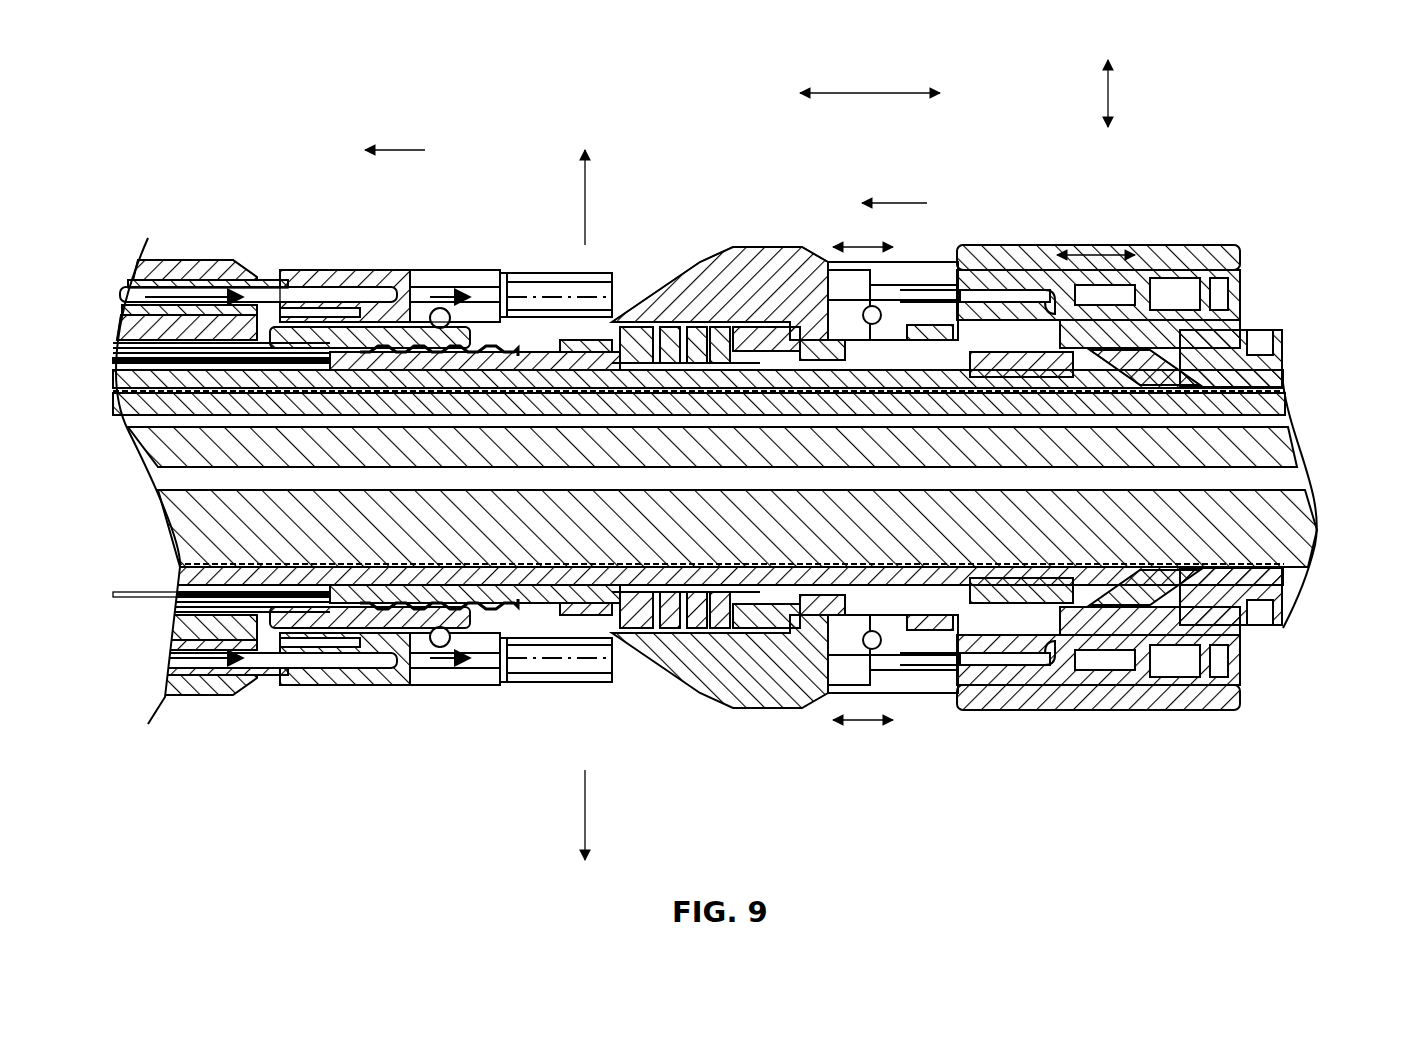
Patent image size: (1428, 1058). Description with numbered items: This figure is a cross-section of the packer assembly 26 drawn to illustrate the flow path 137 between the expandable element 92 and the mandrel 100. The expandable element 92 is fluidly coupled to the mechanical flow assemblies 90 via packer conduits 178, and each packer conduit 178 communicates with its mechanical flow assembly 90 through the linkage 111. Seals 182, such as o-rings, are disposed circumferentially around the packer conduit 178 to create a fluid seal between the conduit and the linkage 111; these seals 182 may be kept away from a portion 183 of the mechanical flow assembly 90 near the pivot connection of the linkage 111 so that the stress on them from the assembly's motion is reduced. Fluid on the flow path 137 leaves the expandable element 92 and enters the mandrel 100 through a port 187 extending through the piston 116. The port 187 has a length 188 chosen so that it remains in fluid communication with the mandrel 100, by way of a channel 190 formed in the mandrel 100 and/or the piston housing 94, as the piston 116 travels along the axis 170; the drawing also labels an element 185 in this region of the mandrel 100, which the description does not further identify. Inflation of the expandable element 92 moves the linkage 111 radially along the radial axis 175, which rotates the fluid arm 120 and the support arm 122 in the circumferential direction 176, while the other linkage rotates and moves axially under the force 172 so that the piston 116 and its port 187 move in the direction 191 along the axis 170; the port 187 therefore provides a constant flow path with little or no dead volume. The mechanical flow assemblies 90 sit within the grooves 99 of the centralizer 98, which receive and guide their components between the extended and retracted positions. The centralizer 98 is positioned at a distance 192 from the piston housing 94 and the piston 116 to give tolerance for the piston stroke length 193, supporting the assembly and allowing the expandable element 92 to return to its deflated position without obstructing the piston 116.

The packer assembly 26 is at (503, 98).
The mechanical flow assembly 90 is at (480, 236).
The expandable element 92 is at (178, 258).
The piston housing 94 is at (1043, 252).
The centralizer 98 is at (770, 245).
The grooves 99 is at (703, 260).
The mandrel 100 is at (1303, 365).
The second linkage 111 is at (422, 258).
The piston 116 is at (980, 258).
The fluid arm 120 is at (548, 285).
The support arm 122 is at (583, 670).
The flow path 137 is at (212, 260).
The axis 170 is at (870, 92).
The force 172 is at (400, 150).
The radial axis 175 is at (1108, 92).
The circumferential direction 176 is at (583, 158).
The packer conduit 178 is at (293, 266).
The seals 182 is at (298, 265).
The portion 183 is at (353, 682).
The latch arm 185 is at (1200, 412).
The port 187 is at (1120, 255).
The length 188 is at (1085, 252).
The channel 190 is at (1057, 372).
The direction 191 is at (898, 203).
The distance 192 is at (858, 725).
The piston stroke length 193 is at (858, 243).